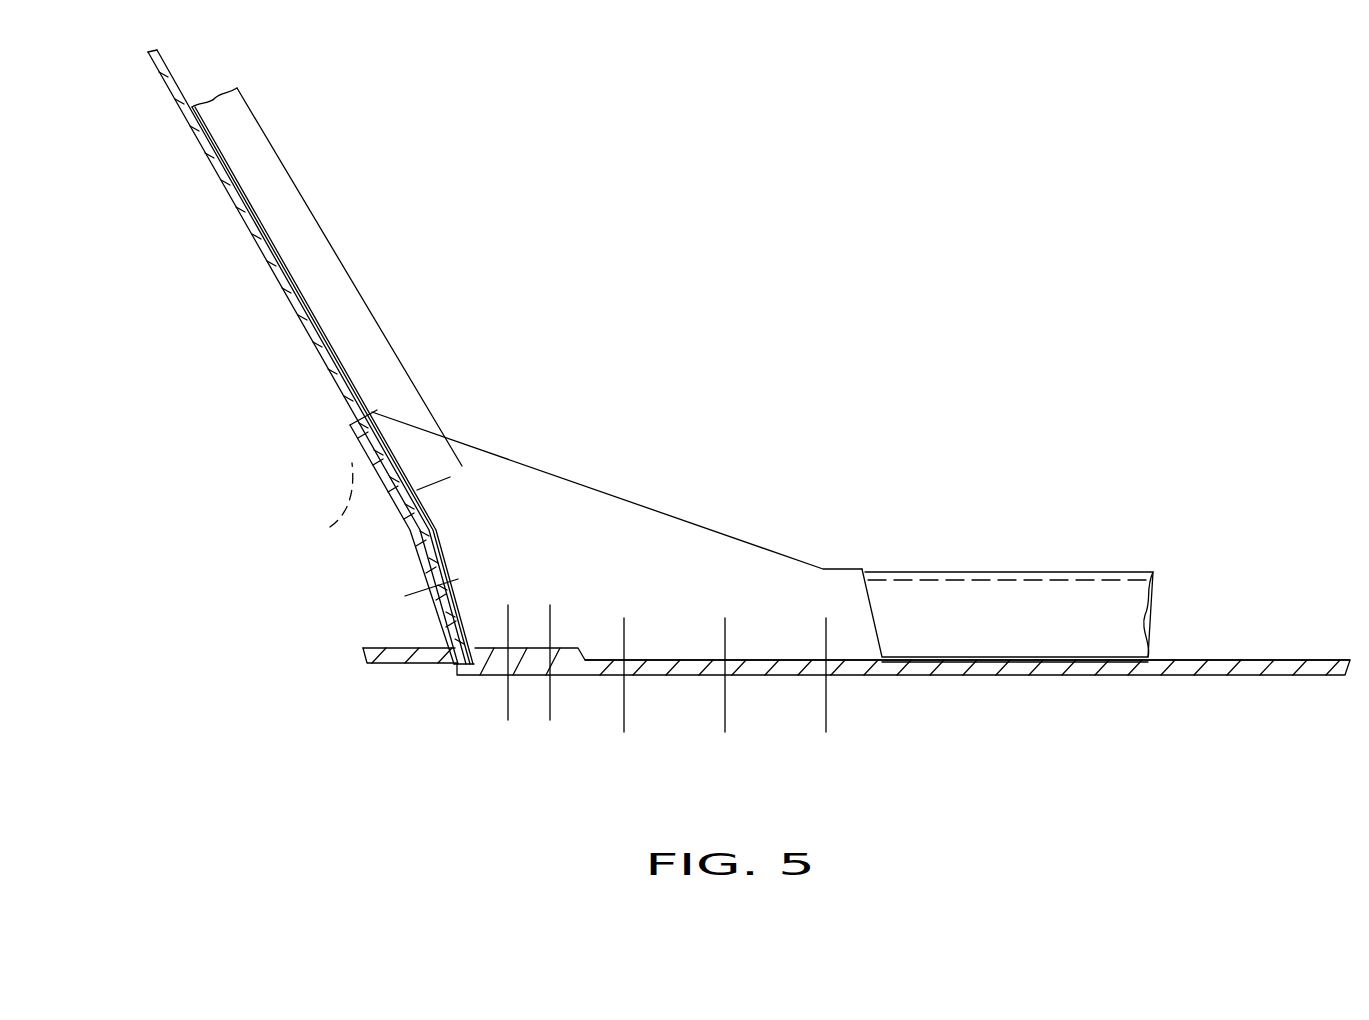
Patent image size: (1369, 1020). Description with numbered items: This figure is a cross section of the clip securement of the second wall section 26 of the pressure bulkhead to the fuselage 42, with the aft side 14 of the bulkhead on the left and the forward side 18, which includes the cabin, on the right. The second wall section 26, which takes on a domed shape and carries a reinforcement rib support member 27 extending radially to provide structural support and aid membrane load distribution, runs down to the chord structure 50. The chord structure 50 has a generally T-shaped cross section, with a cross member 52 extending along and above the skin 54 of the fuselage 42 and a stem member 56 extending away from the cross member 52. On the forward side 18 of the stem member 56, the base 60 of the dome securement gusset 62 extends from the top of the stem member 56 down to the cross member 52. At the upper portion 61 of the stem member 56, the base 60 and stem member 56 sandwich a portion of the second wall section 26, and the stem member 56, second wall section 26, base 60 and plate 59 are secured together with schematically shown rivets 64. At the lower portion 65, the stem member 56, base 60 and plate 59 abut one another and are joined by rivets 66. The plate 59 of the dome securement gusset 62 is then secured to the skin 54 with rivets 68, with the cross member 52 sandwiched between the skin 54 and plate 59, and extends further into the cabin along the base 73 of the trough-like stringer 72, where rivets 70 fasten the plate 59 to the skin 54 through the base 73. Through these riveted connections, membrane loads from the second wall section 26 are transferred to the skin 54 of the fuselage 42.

The aft side 14 is at (150, 352).
The forward side 18 is at (688, 270).
The second wall section 26 is at (244, 221).
The reinforcement rib support member 27 is at (306, 204).
The fuselage 42 is at (1055, 685).
The chord structure 50 is at (400, 552).
The cross member 52 is at (503, 663).
The skin 54 is at (965, 677).
The stem member 56 is at (415, 592).
The plate 59 is at (590, 513).
The base 60 is at (422, 478).
The upper portion 61 is at (345, 451).
The dome securement gusset 62 is at (665, 598).
The rivets 64 is at (380, 543).
The lower portion 65 is at (478, 600).
The rivets 66 is at (476, 577).
The rivets 68 is at (508, 625).
The rivets 70 is at (624, 721).
The stringer 72 is at (987, 612).
The base 73 is at (925, 657).